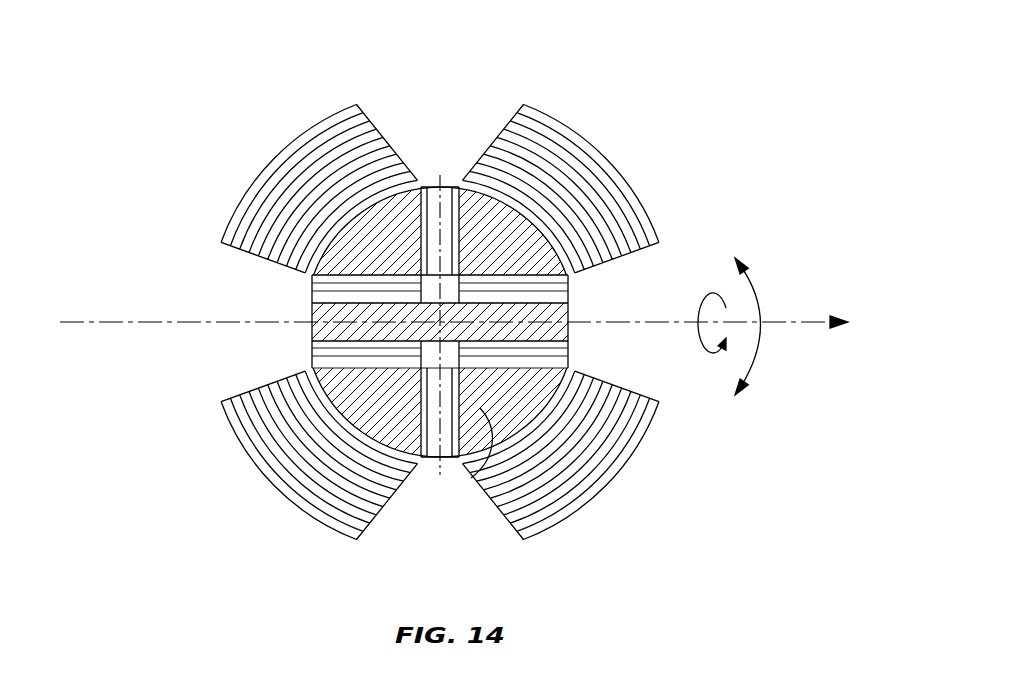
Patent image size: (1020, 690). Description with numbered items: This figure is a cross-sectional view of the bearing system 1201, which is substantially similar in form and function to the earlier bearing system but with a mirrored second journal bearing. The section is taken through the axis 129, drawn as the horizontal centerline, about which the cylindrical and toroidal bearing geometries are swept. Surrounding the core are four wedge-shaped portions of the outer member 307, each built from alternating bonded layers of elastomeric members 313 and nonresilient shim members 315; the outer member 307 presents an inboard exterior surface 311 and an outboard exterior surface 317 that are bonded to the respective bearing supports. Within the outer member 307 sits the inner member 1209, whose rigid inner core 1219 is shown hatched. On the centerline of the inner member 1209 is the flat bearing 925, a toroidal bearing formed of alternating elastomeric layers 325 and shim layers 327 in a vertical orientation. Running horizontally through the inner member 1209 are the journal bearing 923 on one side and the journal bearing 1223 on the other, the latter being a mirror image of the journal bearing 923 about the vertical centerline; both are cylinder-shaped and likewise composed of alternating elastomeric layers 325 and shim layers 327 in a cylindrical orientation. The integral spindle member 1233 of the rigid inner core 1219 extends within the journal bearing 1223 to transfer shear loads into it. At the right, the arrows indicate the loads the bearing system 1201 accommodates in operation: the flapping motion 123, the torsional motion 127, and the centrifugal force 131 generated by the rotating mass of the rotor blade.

The bearing system 1201 is at (218, 90).
The inner member 1209 is at (420, 175).
The flat bearing 925 is at (458, 173).
The outer member 307 is at (585, 108).
The nonresilient shim member 315 is at (322, 143).
The elastomeric member 313 is at (272, 172).
The outboard exterior surface 317 is at (647, 213).
The inboard exterior surface 311 is at (230, 217).
The journal bearing 923 is at (297, 292).
The shim layer 327 is at (313, 286).
The spindle member 1233 is at (311, 327).
The elastomeric layer 325 is at (308, 358).
The journal bearing 1223 is at (569, 294).
The axis 129 is at (120, 322).
The rigid inner core 1219 is at (480, 408).
The flapping motion 123 is at (757, 312).
The torsional motion 127 is at (711, 355).
The centrifugal force 131 is at (787, 324).